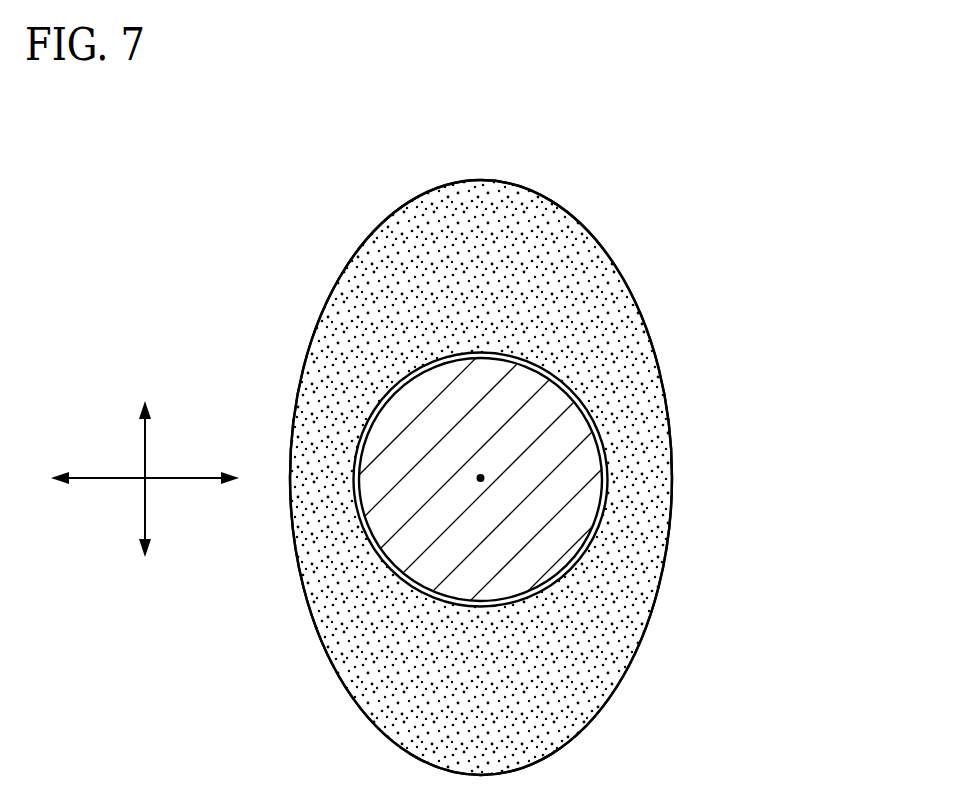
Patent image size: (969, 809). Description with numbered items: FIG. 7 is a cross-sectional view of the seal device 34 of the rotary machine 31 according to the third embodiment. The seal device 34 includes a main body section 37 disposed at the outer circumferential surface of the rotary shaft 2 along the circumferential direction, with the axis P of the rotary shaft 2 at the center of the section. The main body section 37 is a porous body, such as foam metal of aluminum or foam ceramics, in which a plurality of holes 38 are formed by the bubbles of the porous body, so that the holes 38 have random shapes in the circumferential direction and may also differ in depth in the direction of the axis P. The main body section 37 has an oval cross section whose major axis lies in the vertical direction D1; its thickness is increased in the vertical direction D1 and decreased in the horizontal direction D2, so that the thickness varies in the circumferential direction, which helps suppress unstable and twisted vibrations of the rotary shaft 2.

The rotary machine 31 is at (807, 179).
The seal device 34 is at (689, 275).
The main body section 37 is at (622, 553).
The holes 38 is at (647, 468).
The rotary shaft 2 is at (502, 557).
The axis P is at (483, 480).
The vertical direction D1 is at (145, 445).
The horizontal direction D2 is at (183, 480).